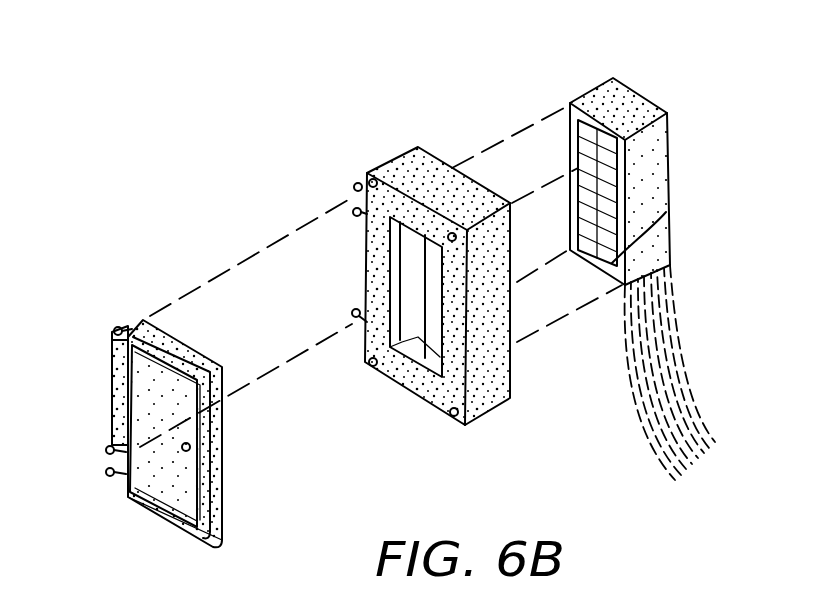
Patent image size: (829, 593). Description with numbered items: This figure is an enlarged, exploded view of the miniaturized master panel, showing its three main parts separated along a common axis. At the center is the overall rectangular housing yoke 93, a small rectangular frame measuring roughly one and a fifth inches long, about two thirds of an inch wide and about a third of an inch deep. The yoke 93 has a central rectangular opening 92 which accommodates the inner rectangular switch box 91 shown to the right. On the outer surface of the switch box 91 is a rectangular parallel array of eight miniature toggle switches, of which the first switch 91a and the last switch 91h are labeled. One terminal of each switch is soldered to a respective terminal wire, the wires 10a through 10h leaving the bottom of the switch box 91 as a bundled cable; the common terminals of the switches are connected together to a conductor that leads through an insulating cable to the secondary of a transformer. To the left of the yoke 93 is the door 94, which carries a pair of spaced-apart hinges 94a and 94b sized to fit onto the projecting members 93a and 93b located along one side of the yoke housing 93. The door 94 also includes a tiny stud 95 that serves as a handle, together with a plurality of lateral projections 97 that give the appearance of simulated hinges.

The terminal wire 10a is at (626, 312).
The terminal wire 10h is at (680, 300).
The inner rectangular switch box 91 is at (628, 100).
The miniature toggle switch 91a is at (582, 127).
The miniature toggle switch 91h is at (666, 212).
The central rectangular opening 92 is at (418, 342).
The rectangular housing yoke 93 is at (436, 178).
The projecting member 93a is at (352, 192).
The projecting member 93b is at (358, 310).
The door 94 is at (145, 360).
The hinge 94a is at (114, 332).
The hinge 94b is at (106, 452).
The stud 95 is at (188, 452).
The lateral projection 97 is at (110, 397).